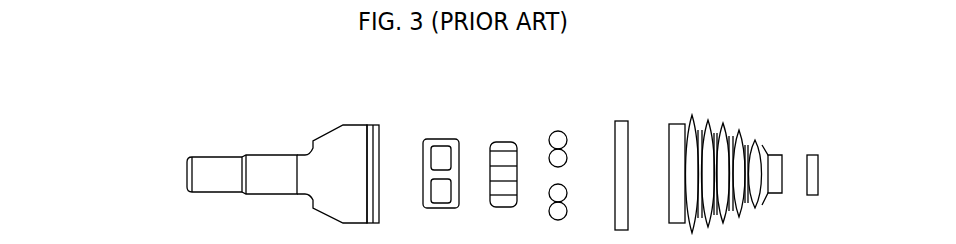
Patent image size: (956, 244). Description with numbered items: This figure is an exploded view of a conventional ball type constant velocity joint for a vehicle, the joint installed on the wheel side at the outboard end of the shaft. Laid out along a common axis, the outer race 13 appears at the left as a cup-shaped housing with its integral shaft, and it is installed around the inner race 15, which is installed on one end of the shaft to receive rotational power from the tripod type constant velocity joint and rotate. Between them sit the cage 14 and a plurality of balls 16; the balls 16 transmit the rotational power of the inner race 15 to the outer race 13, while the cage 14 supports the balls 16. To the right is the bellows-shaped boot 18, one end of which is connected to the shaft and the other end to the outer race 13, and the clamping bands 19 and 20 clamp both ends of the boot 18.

The outer race 13 is at (338, 131).
The cage 14 is at (439, 139).
The inner race 15 is at (501, 143).
The balls 16 is at (559, 131).
The boot 18 is at (723, 125).
The clamping band 19 is at (812, 155).
The clamping band 20 is at (622, 121).